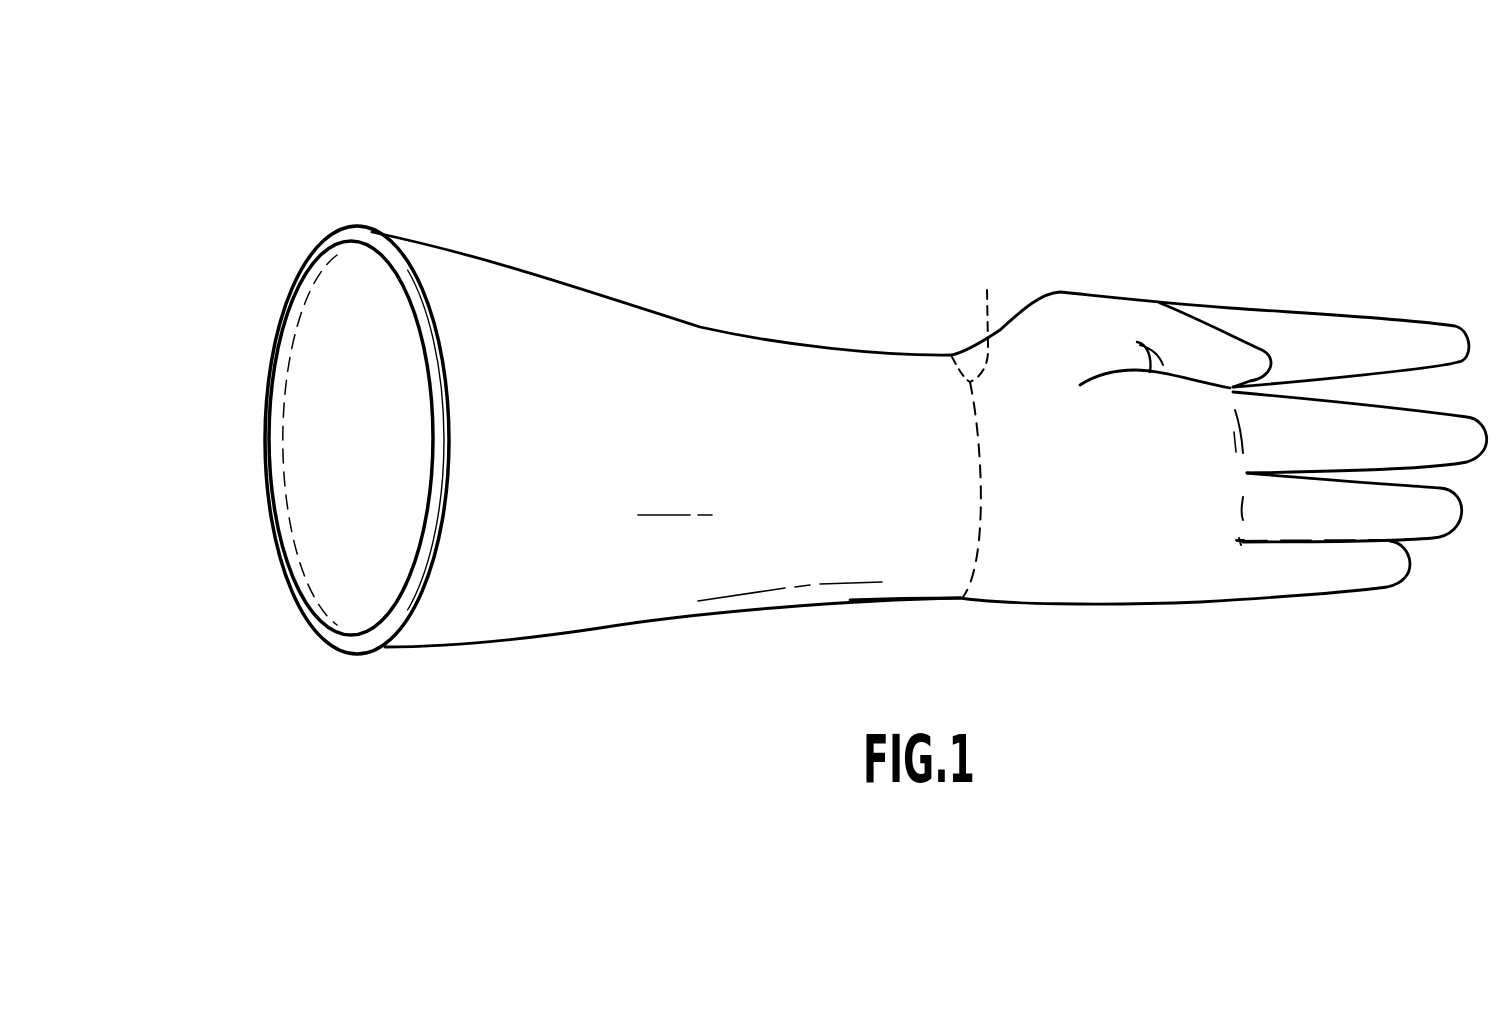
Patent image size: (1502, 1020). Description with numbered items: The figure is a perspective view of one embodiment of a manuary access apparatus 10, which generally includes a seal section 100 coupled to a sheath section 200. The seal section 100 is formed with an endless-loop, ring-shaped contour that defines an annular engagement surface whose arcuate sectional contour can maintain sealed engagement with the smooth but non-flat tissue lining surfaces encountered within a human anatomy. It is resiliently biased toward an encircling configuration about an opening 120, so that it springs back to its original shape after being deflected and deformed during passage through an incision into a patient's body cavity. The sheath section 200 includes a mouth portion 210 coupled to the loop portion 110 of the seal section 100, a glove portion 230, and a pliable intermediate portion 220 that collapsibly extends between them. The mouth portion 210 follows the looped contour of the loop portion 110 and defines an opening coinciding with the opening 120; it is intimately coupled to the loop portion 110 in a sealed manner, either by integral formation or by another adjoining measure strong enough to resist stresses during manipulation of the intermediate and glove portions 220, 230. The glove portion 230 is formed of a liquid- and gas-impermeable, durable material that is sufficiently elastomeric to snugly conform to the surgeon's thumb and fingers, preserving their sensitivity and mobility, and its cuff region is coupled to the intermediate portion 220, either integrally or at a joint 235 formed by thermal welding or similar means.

The manuary access apparatus 10 is at (1056, 133).
The seal section 100 is at (395, 249).
The loop portion 110 is at (397, 635).
The opening 120 is at (325, 510).
The sheath section 200 is at (815, 368).
The mouth portion 210 is at (432, 305).
The intermediate portion 220 is at (918, 578).
The glove portion 230 is at (1130, 312).
The joint 235 is at (982, 424).